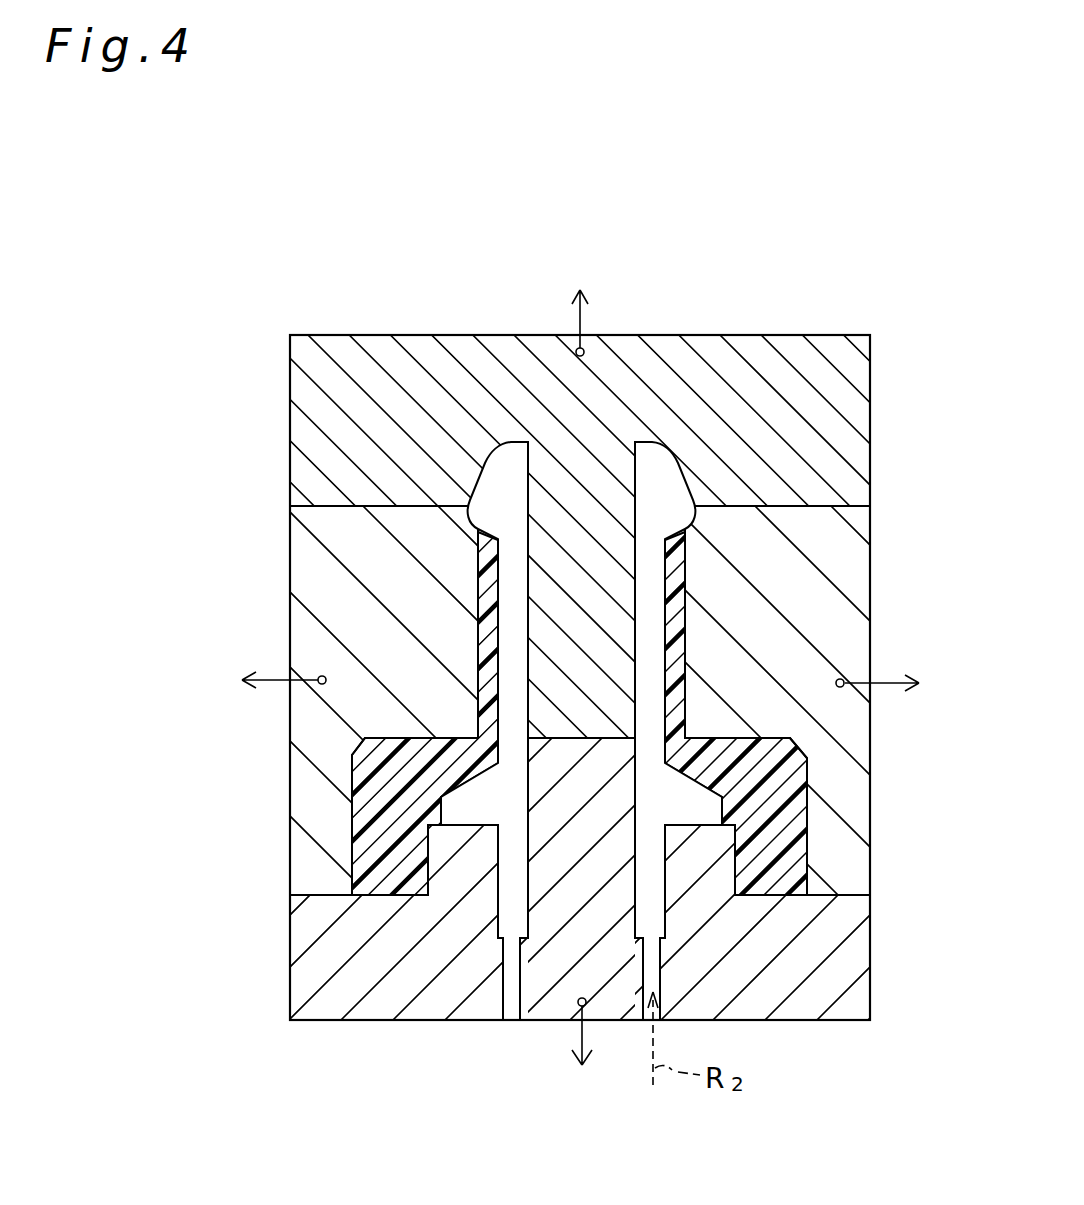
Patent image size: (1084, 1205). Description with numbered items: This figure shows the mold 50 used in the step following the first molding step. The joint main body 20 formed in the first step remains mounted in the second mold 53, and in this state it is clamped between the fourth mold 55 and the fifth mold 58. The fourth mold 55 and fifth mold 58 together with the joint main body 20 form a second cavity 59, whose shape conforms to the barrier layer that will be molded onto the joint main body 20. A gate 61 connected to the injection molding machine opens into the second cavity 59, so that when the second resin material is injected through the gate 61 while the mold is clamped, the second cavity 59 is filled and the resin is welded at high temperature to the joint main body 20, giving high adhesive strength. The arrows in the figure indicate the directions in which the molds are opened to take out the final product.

The mold assembly 50 is at (866, 299).
The fourth mold 55 is at (503, 348).
The second mold 53 is at (316, 568).
The second cavity 59 is at (650, 683).
The joint main body 20 is at (790, 752).
The fifth mold 58 is at (806, 1018).
The gate 61 is at (644, 978).